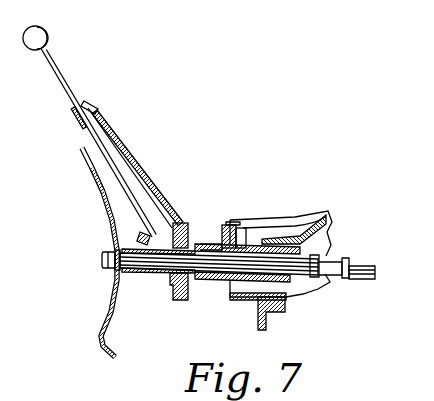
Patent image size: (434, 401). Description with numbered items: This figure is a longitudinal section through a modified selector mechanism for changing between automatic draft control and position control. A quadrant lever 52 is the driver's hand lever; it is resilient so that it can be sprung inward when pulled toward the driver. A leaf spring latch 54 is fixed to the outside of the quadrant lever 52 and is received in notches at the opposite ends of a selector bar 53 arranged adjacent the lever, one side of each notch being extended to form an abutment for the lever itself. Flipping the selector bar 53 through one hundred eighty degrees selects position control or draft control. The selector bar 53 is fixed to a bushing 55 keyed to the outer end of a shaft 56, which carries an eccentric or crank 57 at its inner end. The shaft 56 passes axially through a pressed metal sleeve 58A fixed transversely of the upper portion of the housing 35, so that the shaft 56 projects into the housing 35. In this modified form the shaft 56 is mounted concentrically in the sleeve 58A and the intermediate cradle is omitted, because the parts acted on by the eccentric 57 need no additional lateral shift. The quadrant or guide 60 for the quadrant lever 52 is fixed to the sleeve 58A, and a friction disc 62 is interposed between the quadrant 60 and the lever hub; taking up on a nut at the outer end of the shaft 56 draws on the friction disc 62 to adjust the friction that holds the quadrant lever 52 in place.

The quadrant lever 52 is at (63, 78).
The quadrant 60 is at (125, 137).
The leaf spring latch 54 is at (90, 160).
The selector bar 53 is at (110, 212).
The bushing 55 is at (130, 272).
The shaft 56 is at (212, 263).
The pressed metal sleeve 58A is at (205, 242).
The friction disc 62 is at (175, 300).
The housing 35 is at (260, 222).
The eccentric 57 is at (362, 262).